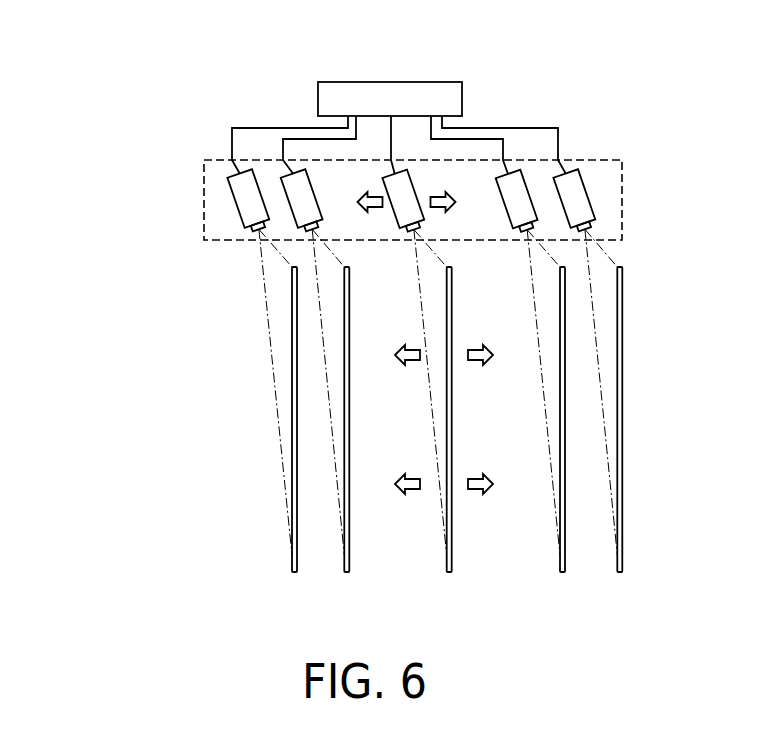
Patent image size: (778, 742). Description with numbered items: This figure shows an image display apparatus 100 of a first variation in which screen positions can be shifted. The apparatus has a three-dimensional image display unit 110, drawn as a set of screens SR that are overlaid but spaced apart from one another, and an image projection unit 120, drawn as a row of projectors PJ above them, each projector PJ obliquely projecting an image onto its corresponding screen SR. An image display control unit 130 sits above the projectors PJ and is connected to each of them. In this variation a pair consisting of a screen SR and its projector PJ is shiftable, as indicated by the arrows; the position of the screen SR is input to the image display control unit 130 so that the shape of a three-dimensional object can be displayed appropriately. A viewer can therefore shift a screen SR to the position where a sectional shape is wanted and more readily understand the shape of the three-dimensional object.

The image display apparatus 100 is at (589, 116).
The three-dimensional image display unit 110 is at (200, 265).
The image projection unit 120 is at (203, 203).
The image display control unit 130 is at (318, 100).
The projector PJ is at (586, 193).
The screen SR is at (622, 346).